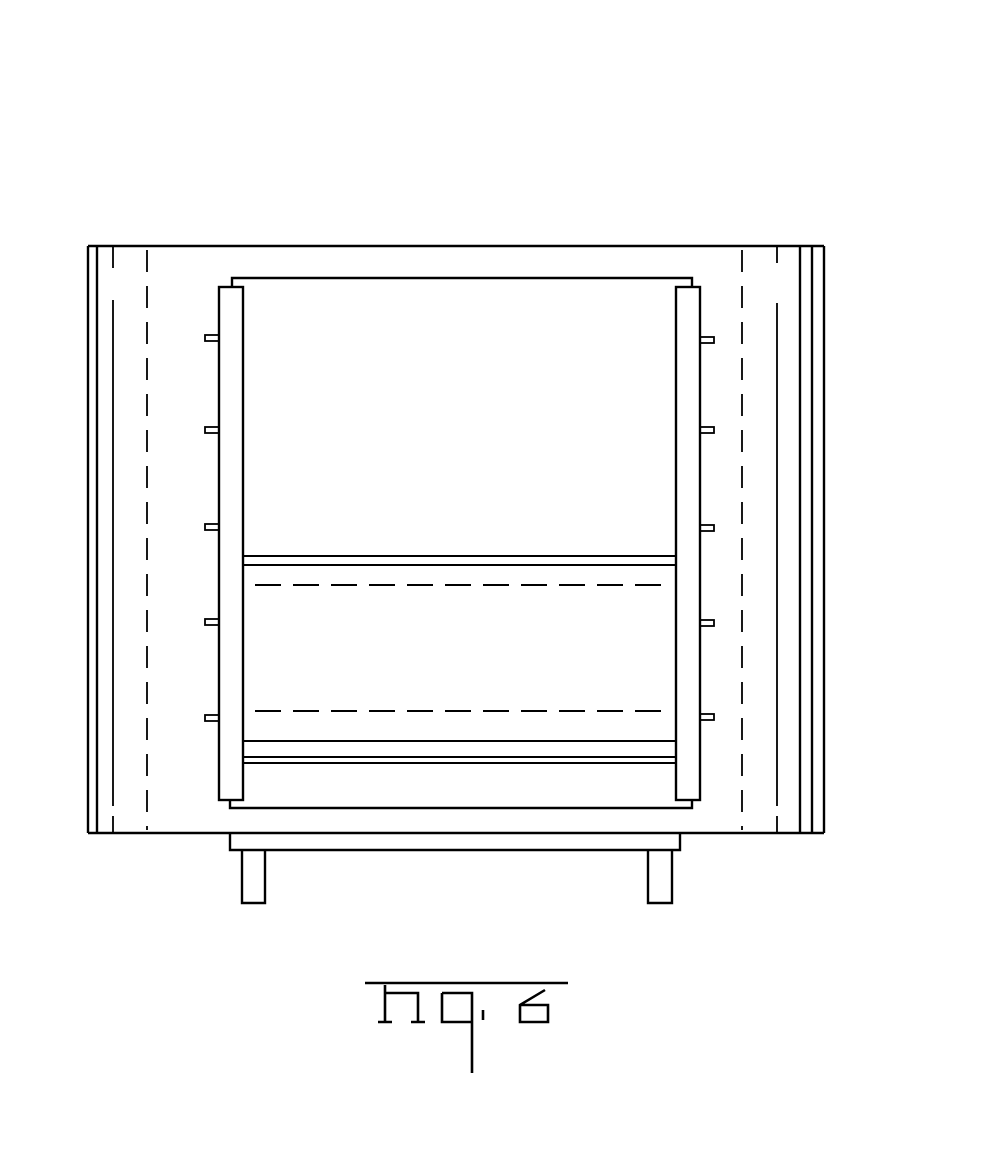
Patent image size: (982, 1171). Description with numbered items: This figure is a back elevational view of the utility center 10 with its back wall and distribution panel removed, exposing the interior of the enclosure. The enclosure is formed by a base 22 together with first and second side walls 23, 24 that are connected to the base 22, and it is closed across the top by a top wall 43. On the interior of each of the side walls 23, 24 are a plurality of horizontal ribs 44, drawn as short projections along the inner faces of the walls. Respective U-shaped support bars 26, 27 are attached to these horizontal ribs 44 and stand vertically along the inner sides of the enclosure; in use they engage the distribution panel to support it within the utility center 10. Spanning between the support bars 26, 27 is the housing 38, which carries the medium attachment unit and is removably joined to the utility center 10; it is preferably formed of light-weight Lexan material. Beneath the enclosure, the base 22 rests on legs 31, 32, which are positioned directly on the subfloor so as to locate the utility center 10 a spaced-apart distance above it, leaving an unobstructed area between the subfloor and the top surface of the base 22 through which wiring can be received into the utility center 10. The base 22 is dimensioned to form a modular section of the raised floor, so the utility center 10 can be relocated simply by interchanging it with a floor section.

The utility center 10 is at (128, 200).
The base 22 is at (500, 848).
The first side wall 23 is at (85, 360).
The second side wall 24 is at (823, 505).
The first U-shaped support bar 26 is at (243, 357).
The second U-shaped support bar 27 is at (677, 330).
The leg 31 is at (247, 885).
The leg 32 is at (663, 892).
The MAU housing 38 is at (300, 657).
The top wall 43 is at (408, 246).
The horizontal ribs 44 is at (205, 527).